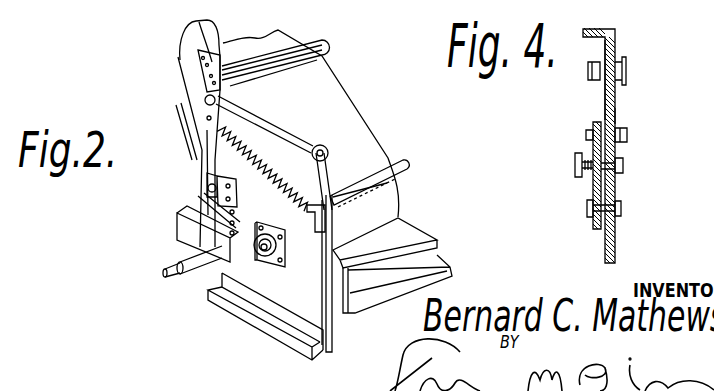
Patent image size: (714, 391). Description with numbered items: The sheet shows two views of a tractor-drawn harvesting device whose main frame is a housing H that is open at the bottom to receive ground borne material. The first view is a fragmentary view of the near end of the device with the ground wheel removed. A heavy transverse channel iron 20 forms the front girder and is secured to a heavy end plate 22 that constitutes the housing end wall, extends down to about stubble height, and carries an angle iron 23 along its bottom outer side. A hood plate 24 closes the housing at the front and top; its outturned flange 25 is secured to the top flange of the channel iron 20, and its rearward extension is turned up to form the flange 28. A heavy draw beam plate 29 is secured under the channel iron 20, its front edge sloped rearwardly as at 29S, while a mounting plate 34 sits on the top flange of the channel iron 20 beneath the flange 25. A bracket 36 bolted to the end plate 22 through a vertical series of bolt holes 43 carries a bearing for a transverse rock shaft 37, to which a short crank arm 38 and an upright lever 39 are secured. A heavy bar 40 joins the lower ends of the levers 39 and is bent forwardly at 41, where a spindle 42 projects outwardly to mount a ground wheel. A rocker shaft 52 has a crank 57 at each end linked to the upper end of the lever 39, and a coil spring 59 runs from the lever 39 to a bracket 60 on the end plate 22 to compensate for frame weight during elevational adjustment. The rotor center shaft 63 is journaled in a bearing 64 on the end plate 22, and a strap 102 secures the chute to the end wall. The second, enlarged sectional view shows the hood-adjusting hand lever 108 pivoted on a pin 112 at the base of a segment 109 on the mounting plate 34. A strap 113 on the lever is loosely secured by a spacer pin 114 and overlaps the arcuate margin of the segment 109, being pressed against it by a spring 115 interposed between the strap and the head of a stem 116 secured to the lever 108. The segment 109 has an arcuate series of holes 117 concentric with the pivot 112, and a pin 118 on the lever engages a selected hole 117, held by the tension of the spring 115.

In FIG. 2, the transverse channel iron 20 is at (360, 278).
In FIG. 2, the end plate 22 is at (300, 302).
In FIG. 2, the angle iron 23 is at (258, 318).
In FIG. 2, the hood plate 24 is at (355, 121).
In FIG. 2, the outturned flange 25 is at (403, 223).
In FIG. 2, the flange 28 is at (327, 50).
In FIG. 2, the draw beam plate 29 is at (433, 260).
In FIG. 2, the sloped front edge 29S is at (453, 280).
In FIG. 2, the mounting plate 34 is at (420, 237).
In FIG. 2, the bracket 36 is at (237, 198).
In FIG. 2, the rock shaft 37 is at (208, 189).
In FIG. 2, the crank arm 38 is at (213, 172).
In FIG. 2, the upright lever 39 is at (198, 183).
In FIG. 2, the bar 40 is at (195, 209).
In FIG. 2, the forwardly extending portion 41 is at (185, 232).
In FIG. 2, the spindle 42 is at (205, 265).
In FIG. 2, the bolt holes 43 is at (234, 228).
In FIG. 2, the rocker shaft 52 is at (400, 165).
In FIG. 2, the crank 57 is at (328, 168).
In FIG. 2, the coil spring 59 is at (280, 190).
In FIG. 2, the bracket 60 is at (317, 233).
In FIG. 2, the center shaft 63 is at (262, 252).
In FIG. 2, the bearing 64 is at (287, 263).
In FIG. 2, the strap 102 is at (197, 55).
In FIG. 2, the housing H is at (397, 144).
In FIG. 4, the hand lever 108 is at (618, 230).
In FIG. 4, the segment 109 is at (600, 105).
In FIG. 4, the pin 112 is at (627, 70).
In FIG. 4, the strap 113 is at (595, 188).
In FIG. 4, the spacer pin 114 is at (587, 210).
In FIG. 4, the spring 115 is at (592, 153).
In FIG. 4, the stem 116 is at (623, 163).
In FIG. 4, the holes 117 is at (615, 116).
In FIG. 4, the pin 118 is at (627, 135).